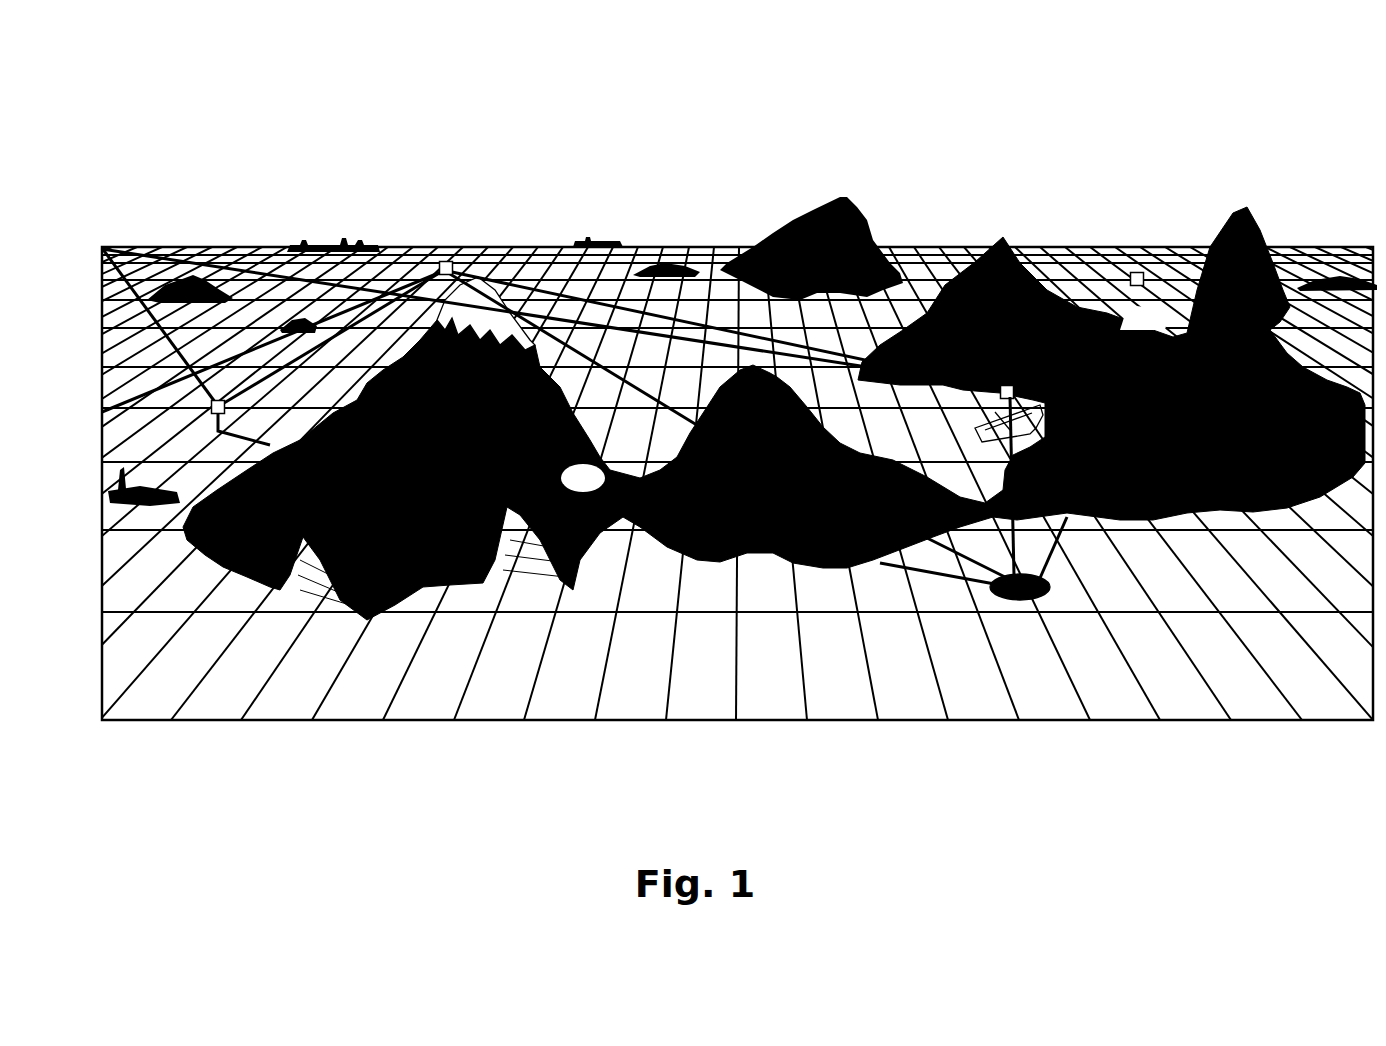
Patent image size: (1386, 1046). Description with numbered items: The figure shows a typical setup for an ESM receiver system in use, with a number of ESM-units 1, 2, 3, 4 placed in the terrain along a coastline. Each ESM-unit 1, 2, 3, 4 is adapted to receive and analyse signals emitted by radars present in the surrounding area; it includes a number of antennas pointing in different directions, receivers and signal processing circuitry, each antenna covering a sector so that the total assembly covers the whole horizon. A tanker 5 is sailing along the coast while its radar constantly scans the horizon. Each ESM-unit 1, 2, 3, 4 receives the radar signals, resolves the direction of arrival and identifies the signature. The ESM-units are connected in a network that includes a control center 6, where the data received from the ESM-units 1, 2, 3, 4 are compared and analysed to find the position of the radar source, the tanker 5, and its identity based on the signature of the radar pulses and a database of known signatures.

The ESM-unit 1 is at (185, 427).
The ESM-unit 2 is at (441, 260).
The ESM-unit 3 is at (1020, 242).
The ESM-unit 4 is at (1130, 330).
The tanker 5 is at (345, 240).
The control center 6 is at (1063, 607).